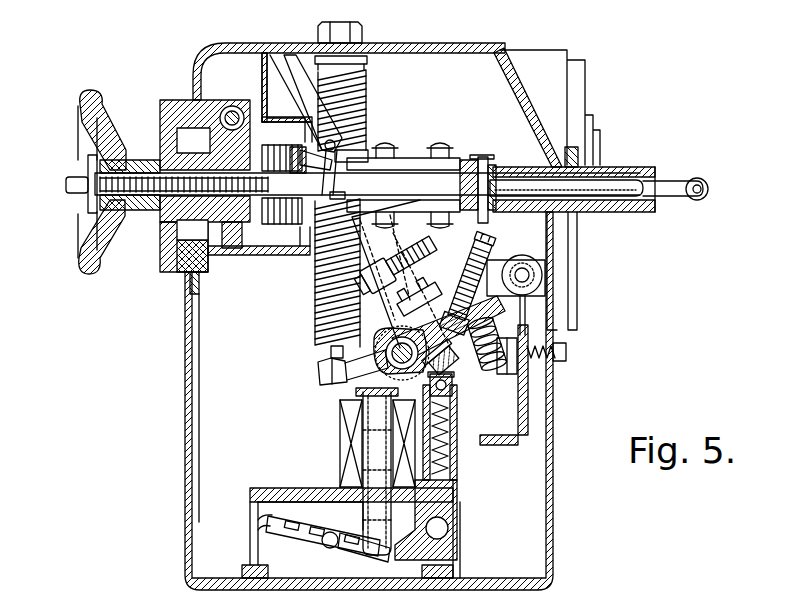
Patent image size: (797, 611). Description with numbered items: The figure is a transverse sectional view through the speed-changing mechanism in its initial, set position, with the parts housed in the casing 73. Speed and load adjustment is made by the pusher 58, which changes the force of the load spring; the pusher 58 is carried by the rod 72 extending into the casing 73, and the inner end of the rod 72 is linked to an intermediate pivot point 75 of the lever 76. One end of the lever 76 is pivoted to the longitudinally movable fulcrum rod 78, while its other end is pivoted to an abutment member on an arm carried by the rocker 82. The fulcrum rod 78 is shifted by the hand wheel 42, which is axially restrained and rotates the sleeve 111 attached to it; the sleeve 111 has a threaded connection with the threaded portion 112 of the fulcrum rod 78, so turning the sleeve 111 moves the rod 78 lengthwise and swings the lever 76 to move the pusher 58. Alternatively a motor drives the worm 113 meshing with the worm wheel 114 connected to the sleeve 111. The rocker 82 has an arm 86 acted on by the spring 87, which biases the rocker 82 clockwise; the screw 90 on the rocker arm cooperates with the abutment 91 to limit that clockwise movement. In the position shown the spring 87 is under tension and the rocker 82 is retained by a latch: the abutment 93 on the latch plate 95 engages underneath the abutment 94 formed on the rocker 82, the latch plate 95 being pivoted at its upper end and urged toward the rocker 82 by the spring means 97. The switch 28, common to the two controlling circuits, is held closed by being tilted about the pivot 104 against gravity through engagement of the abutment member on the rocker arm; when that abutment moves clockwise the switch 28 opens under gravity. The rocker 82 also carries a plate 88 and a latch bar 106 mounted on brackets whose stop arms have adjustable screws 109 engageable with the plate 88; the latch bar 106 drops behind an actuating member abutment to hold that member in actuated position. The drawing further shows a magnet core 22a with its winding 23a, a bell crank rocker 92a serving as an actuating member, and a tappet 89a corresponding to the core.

The hand wheel 42 is at (80, 108).
The sleeve 111 is at (152, 174).
The worm 113 is at (230, 110).
The threaded portion 112 is at (160, 196).
The worm wheel 114 is at (230, 248).
The switch 28 is at (284, 133).
The pivot 104 is at (340, 138).
The lever 76 is at (421, 163).
The intermediate pivot point 75 is at (479, 157).
The fulcrum rod 78 is at (531, 185).
The rod 72 is at (676, 188).
The pusher 58 is at (705, 179).
The casing 73 is at (185, 353).
The spring 87 is at (316, 290).
The arm 86 is at (318, 372).
The plate 88 is at (453, 323).
The screw 90 is at (405, 258).
The adjustable screws 109 is at (434, 296).
The adjusting screw 89a is at (470, 258).
The abutment 91 is at (512, 258).
The abutment 94 is at (503, 358).
The abutment 93 is at (514, 375).
The spring means 97 is at (555, 337).
The latch plate 95 is at (528, 388).
The latch bar 106 is at (455, 382).
The spring 92a is at (458, 490).
The coil 23a is at (341, 445).
The plunger 22a is at (366, 470).
The rocker 82 is at (372, 375).